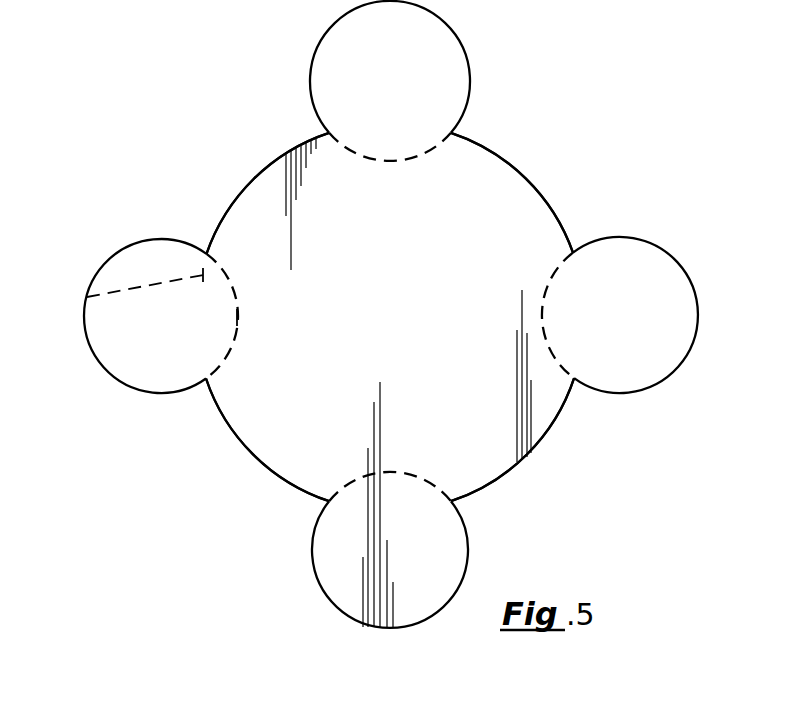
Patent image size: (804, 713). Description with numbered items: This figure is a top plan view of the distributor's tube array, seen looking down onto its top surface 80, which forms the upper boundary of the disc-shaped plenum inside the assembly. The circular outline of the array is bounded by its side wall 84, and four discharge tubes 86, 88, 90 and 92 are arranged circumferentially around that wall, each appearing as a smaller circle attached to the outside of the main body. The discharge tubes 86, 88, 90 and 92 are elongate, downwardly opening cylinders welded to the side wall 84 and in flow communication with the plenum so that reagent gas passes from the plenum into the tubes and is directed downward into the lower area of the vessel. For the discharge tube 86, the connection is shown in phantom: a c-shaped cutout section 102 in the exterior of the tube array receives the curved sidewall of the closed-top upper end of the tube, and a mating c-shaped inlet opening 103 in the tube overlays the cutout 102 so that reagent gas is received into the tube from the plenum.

The top surface 80 is at (477, 170).
The side wall 84 is at (253, 175).
The discharge tube 86 is at (108, 258).
The discharge tube 88 is at (467, 545).
The discharge tube 90 is at (697, 330).
The discharge tube 92 is at (312, 66).
The c-shaped cutout section 102 is at (87, 297).
The c-shaped inlet opening 103 is at (237, 317).